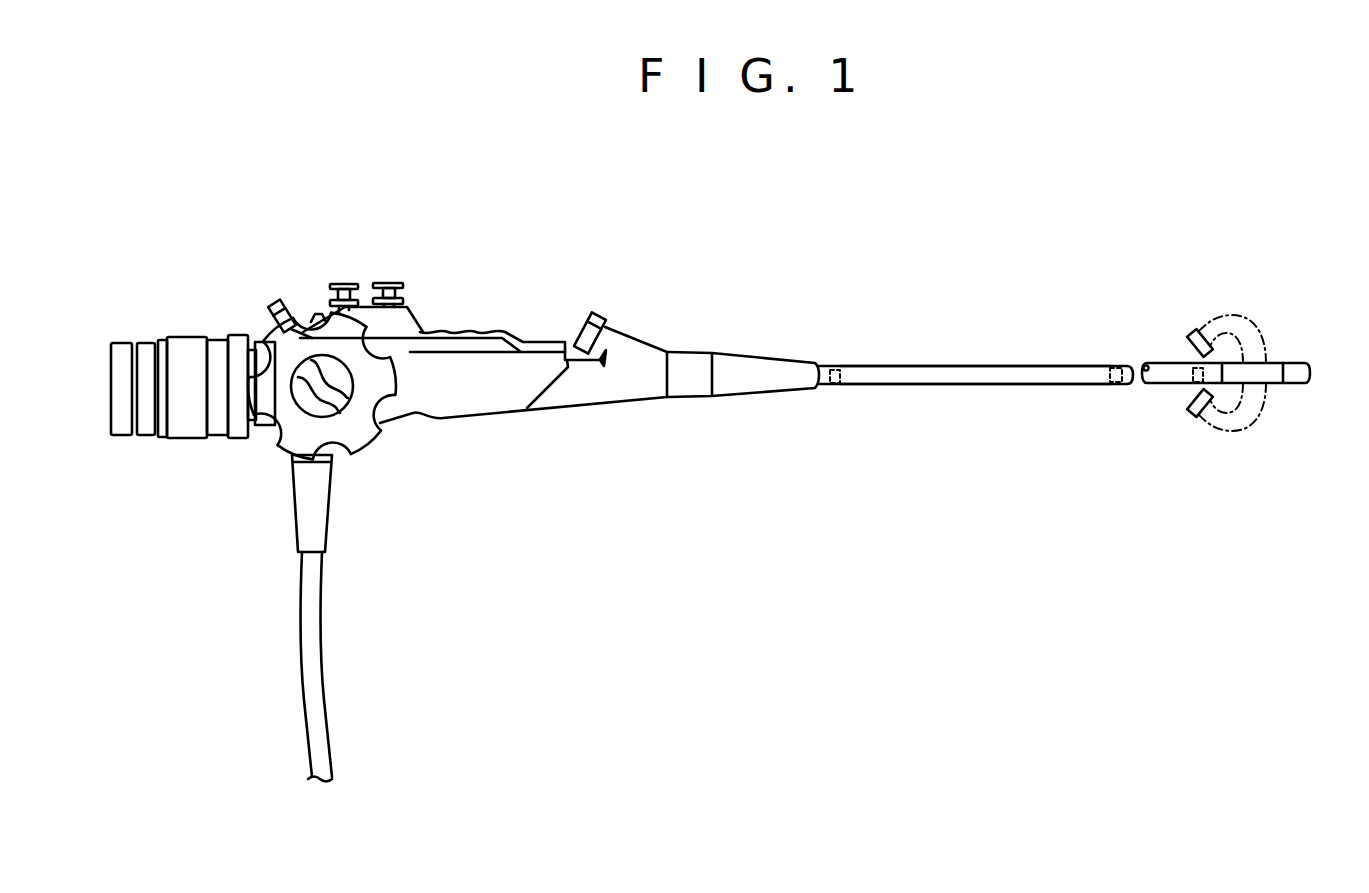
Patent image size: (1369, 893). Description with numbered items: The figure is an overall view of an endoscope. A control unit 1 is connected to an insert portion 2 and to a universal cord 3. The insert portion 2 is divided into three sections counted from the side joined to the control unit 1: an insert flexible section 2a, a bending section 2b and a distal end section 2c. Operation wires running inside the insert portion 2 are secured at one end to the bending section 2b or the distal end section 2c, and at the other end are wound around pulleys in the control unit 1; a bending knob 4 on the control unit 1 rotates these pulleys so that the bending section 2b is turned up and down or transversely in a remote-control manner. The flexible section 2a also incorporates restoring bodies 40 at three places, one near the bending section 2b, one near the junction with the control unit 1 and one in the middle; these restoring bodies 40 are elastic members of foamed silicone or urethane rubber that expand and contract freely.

The control unit 1 is at (513, 412).
The insert portion 2 is at (976, 374).
The insert flexible section 2a is at (958, 385).
The bending section 2b is at (1276, 362).
The distal end section 2c is at (1293, 383).
The universal cord 3 is at (322, 678).
The bending knob 4 is at (362, 450).
The restoring bodies 40 is at (835, 383).